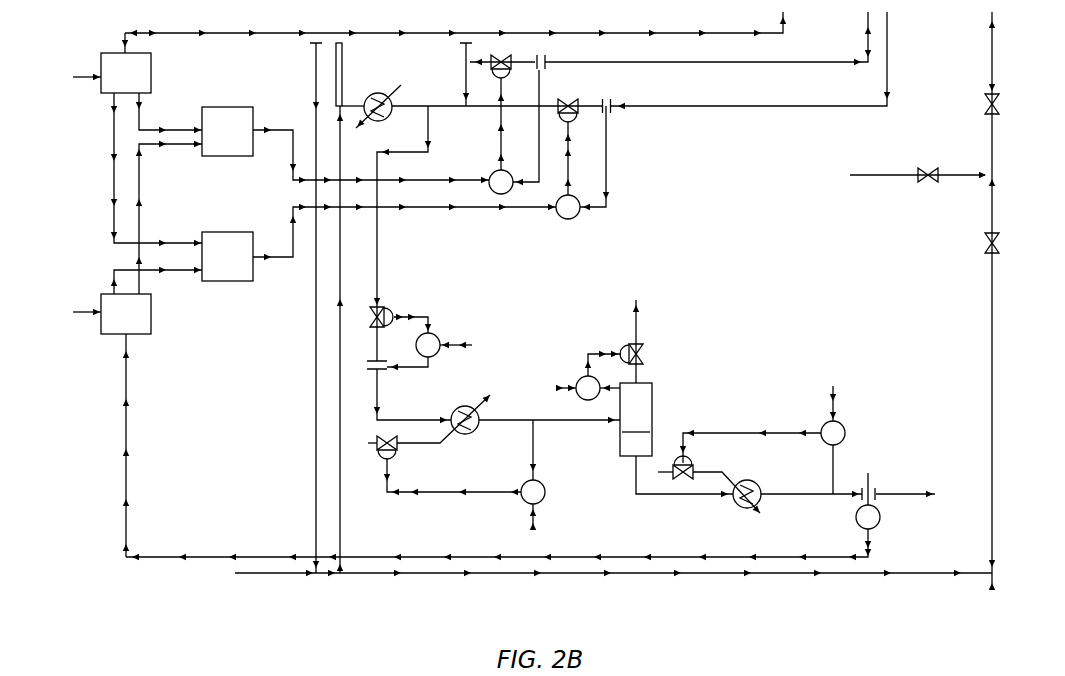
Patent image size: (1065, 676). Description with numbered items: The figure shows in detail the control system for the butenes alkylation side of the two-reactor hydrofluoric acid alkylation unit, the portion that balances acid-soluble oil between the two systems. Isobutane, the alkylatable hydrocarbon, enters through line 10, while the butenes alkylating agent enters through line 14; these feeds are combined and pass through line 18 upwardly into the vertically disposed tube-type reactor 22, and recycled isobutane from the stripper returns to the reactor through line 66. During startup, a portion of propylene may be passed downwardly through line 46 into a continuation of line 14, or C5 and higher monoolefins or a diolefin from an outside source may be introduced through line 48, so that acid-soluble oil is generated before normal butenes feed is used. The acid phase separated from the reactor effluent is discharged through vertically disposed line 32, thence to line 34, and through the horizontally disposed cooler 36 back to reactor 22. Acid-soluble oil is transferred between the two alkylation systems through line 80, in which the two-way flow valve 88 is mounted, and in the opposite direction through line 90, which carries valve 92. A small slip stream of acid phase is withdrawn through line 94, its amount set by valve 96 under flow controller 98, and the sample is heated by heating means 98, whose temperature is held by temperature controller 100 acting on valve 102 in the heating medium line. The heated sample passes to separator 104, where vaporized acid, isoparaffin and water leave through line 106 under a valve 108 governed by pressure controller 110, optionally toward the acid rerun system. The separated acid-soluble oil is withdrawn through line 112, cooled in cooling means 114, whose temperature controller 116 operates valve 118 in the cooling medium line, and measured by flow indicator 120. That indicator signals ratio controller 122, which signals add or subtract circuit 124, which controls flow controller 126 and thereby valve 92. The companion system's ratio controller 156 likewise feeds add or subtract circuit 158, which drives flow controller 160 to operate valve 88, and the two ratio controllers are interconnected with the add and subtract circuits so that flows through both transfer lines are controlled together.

The line 10 is at (298, 574).
The line 14 is at (840, 574).
The line 18 is at (341, 235).
The tube-type reactor 22 is at (342, 48).
The line 32 is at (466, 48).
The line 34 is at (445, 106).
The cooler 36 is at (370, 97).
The line 46 is at (993, 47).
The line 48 is at (888, 175).
The line 66 is at (316, 443).
The line 80 is at (868, 52).
The flow valve 88 is at (512, 56).
The line 90 is at (888, 48).
The valve 92 is at (578, 98).
The line 94 is at (378, 235).
The valve 96 is at (368, 308).
The flow controller / heating means 98 is at (438, 335).
The temperature controller 100 is at (520, 500).
The valve 102 is at (376, 436).
The separator 104 is at (565, 419).
The line 106 is at (638, 312).
The control valve 108 is at (644, 356).
The pressure controller 110 is at (584, 370).
The line 112 is at (634, 492).
The cooling means 114 is at (757, 485).
The temperature controller 116 is at (845, 425).
The valve 118 is at (694, 467).
The flow indicator 120 is at (880, 523).
The ratio controller 122 is at (152, 310).
The add or subtract circuit 124 is at (245, 282).
The flow controller 126 is at (578, 217).
The ratio controller 156 is at (152, 70).
The add or subtract circuit 158 is at (220, 157).
The flow controller 160 is at (492, 172).